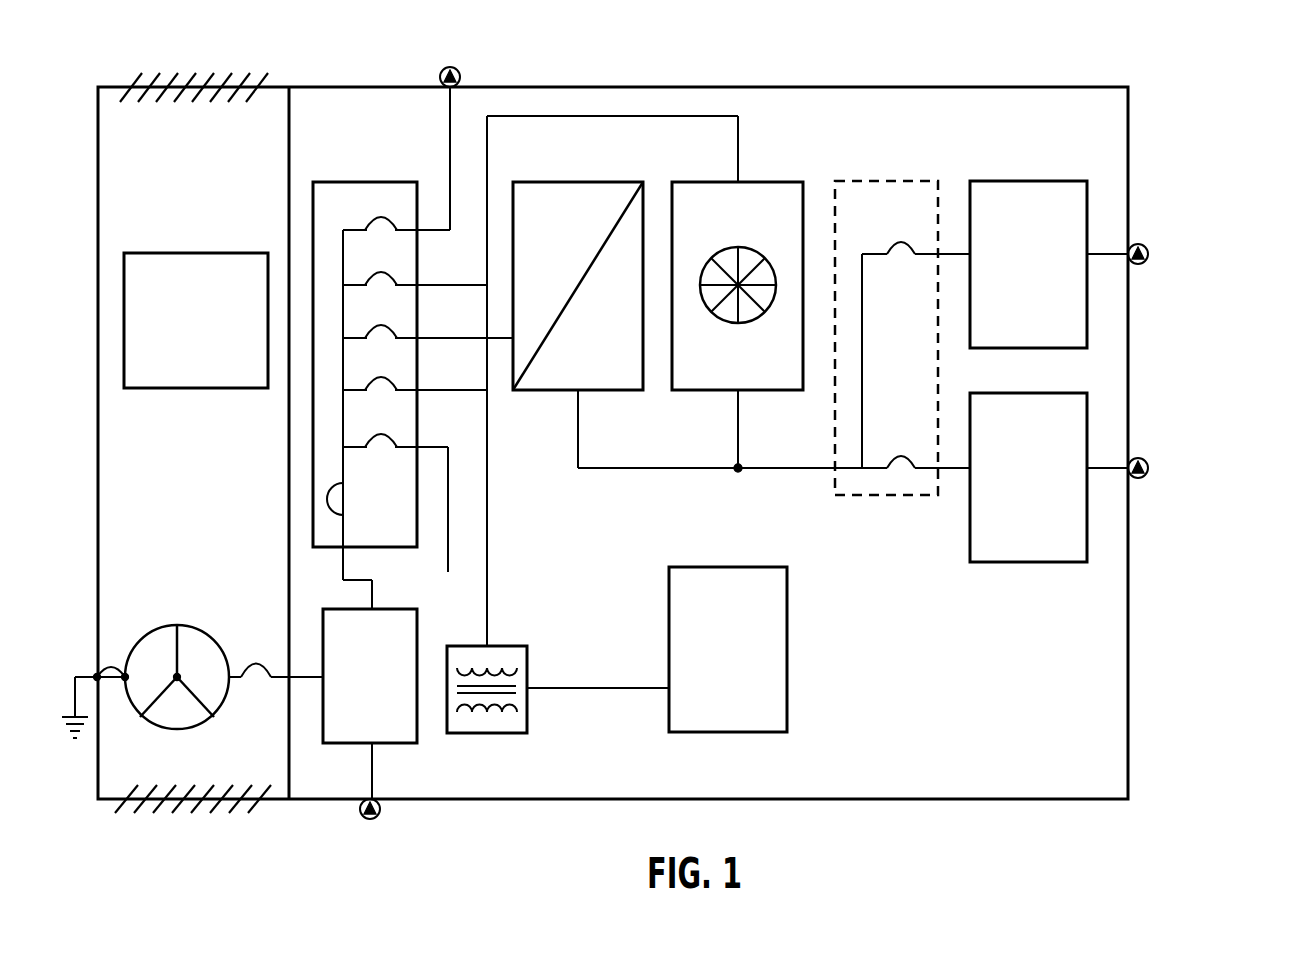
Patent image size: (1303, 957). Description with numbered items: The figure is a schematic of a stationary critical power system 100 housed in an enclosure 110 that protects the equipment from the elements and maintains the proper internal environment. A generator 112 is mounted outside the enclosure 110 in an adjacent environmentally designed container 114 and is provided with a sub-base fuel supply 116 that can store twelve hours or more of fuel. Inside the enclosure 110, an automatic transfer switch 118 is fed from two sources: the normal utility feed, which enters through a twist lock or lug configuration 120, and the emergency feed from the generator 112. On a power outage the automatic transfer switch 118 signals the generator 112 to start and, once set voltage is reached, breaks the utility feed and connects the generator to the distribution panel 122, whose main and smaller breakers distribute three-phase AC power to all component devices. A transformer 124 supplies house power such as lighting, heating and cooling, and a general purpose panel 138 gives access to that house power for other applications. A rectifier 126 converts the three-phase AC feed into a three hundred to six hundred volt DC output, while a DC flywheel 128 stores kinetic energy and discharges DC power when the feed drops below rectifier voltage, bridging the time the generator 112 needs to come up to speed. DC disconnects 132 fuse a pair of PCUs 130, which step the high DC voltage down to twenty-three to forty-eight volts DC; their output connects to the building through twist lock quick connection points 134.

The system 100 is at (968, 812).
The enclosure 110 is at (1128, 800).
The generator 112 is at (137, 712).
The container 114 is at (98, 138).
The sub-base fuel supply 116 is at (220, 291).
The automatic transfer switch (ATS) 118 is at (390, 721).
The twist lock or lug configuration 120 is at (357, 810).
The distribution panel 122 is at (327, 208).
The transformer 124 is at (507, 646).
The rectifier 126 is at (641, 184).
The DC flywheel 128 is at (757, 182).
The PCUs 130 is at (1089, 199).
The DC disconnects (DCDS) 132 is at (852, 178).
The twist lock quick connection points 134 is at (1143, 264).
The general purpose panel 138 is at (773, 592).